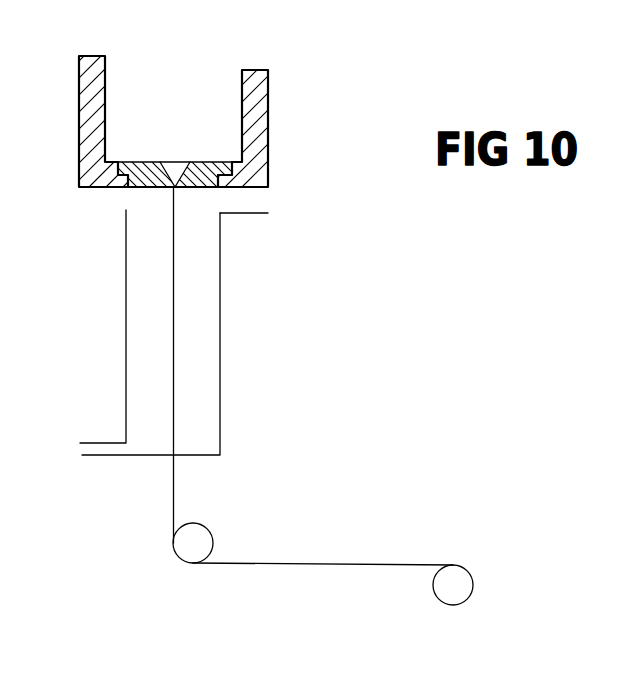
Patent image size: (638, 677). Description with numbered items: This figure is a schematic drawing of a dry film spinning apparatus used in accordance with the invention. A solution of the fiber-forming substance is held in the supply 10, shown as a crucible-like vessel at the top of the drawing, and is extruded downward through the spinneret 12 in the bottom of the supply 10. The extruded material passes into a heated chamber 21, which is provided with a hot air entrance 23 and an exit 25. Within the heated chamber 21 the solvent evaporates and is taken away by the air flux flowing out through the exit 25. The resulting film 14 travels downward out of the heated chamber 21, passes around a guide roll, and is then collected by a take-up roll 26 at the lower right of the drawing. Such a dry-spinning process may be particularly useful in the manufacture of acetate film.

The supply 10 is at (268, 118).
The spinneret 12 is at (182, 192).
The film 14 is at (174, 296).
The heated chamber 21 is at (221, 262).
The hot air entrance 23 is at (72, 450).
The exit 25 is at (268, 204).
The take-up roll 26 is at (468, 571).